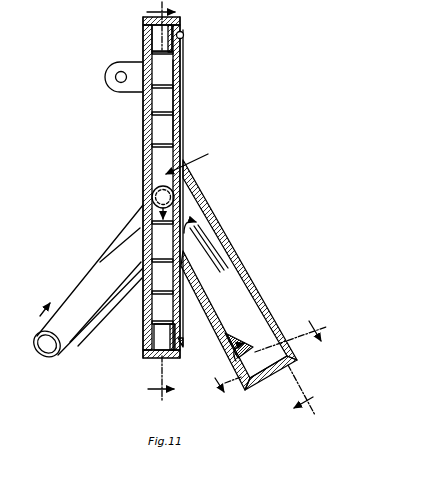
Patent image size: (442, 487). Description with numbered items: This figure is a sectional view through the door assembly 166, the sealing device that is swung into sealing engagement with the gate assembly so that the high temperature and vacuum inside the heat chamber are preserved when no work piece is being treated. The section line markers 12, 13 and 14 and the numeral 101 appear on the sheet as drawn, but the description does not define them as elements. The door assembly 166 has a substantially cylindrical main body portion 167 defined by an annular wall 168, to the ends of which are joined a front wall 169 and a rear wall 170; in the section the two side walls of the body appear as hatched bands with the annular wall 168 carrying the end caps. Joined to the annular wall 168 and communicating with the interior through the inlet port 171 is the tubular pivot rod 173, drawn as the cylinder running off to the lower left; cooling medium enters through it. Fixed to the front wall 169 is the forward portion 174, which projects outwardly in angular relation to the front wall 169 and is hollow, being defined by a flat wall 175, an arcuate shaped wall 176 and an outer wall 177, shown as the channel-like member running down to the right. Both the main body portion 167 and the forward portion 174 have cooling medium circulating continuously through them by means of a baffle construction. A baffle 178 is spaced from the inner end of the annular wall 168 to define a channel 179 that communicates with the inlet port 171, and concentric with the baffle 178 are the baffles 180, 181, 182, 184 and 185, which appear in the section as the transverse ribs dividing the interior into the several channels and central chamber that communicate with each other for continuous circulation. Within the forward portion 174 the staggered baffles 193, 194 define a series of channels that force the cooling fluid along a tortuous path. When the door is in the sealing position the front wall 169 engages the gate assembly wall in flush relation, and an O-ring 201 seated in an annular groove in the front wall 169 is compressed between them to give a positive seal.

The section line 12- 12 is at (148, 202).
The section line 13- 13 is at (251, 279).
The section line 14- 14 is at (269, 361).
The wall 101 is at (178, 109).
The door assembly 166 is at (192, 133).
The main body portion 167 is at (140, 160).
The annular wall 168 is at (158, 357).
The front wall 169 is at (178, 85).
The rear wall 170 is at (151, 115).
The inlet port 171 is at (162, 198).
The tubular pivot rod 173 is at (100, 262).
The forward portion 174 is at (247, 260).
The flat wall 175 is at (268, 308).
The arcuate shaped wall 176 is at (246, 352).
The outer wall 177 is at (262, 386).
The baffle 178 is at (158, 340).
The channel 179 is at (157, 350).
The baffle 180 is at (162, 297).
The baffle 181 is at (160, 267).
The baffle 182 is at (157, 146).
The baffle 184 is at (168, 91).
The baffle 185 is at (165, 52).
The staggered baffle 193 is at (178, 234).
The staggered baffle 194 is at (178, 276).
The O-ring 201 is at (186, 35).